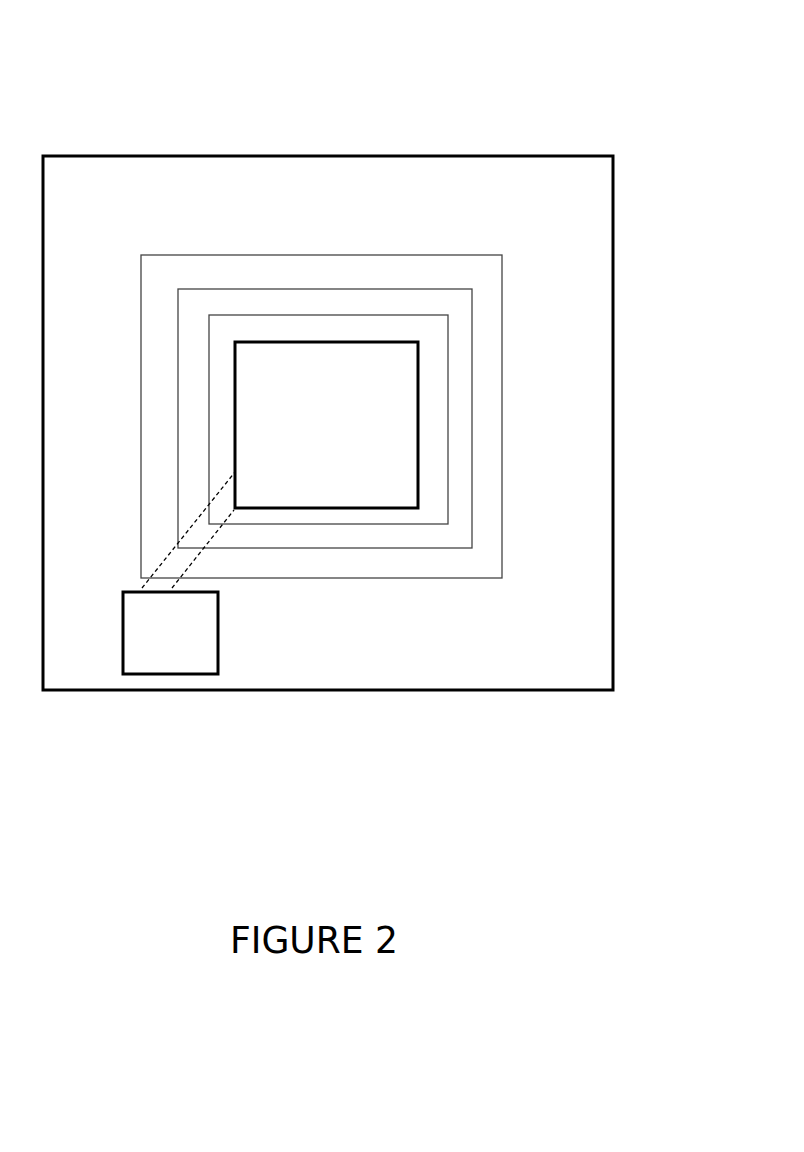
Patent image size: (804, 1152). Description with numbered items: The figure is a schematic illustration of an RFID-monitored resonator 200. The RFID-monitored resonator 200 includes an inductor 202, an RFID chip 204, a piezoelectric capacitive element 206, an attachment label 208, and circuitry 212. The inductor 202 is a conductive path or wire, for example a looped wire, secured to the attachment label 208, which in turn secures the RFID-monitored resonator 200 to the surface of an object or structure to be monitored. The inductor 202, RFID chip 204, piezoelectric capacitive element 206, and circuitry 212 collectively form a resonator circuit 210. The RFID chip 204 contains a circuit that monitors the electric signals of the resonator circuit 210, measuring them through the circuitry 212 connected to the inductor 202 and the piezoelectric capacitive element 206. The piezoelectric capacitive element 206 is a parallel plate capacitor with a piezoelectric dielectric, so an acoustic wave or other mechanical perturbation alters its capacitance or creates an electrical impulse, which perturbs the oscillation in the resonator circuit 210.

The RFID-monitored resonator 200 is at (346, 30).
The inductor 202 is at (374, 253).
The RFID chip 204 is at (170, 633).
The piezoelectric capacitive element 206 is at (326, 425).
The attachment label 208 is at (582, 647).
The resonator circuit 210 is at (375, 600).
The circuitry 212 is at (207, 557).